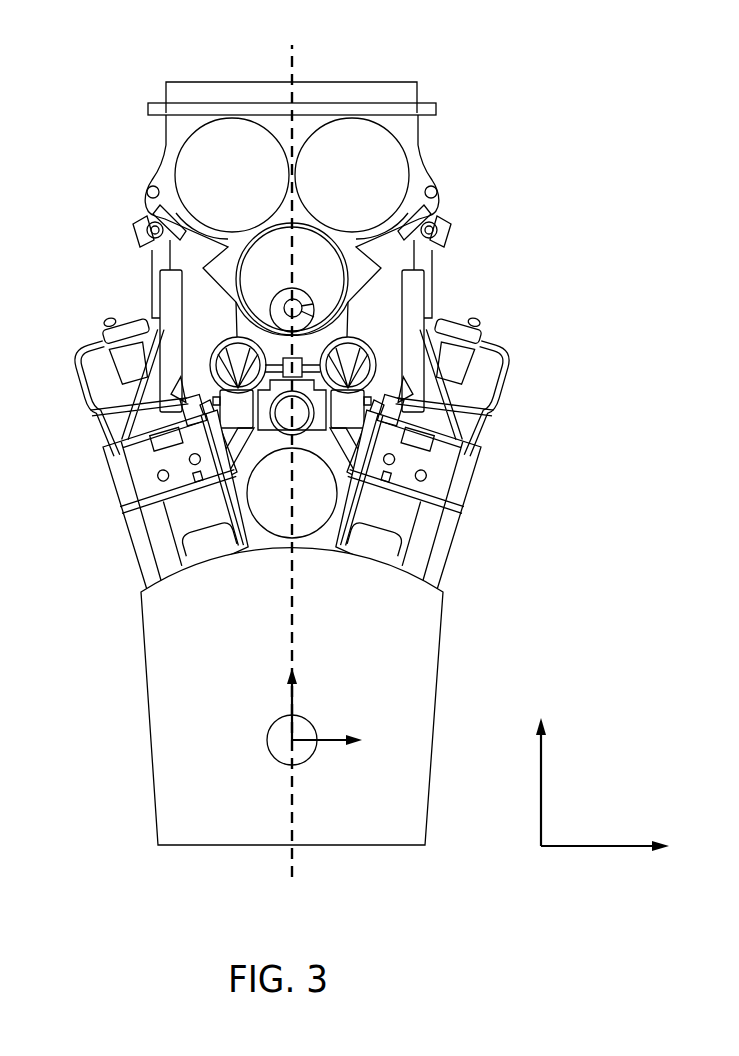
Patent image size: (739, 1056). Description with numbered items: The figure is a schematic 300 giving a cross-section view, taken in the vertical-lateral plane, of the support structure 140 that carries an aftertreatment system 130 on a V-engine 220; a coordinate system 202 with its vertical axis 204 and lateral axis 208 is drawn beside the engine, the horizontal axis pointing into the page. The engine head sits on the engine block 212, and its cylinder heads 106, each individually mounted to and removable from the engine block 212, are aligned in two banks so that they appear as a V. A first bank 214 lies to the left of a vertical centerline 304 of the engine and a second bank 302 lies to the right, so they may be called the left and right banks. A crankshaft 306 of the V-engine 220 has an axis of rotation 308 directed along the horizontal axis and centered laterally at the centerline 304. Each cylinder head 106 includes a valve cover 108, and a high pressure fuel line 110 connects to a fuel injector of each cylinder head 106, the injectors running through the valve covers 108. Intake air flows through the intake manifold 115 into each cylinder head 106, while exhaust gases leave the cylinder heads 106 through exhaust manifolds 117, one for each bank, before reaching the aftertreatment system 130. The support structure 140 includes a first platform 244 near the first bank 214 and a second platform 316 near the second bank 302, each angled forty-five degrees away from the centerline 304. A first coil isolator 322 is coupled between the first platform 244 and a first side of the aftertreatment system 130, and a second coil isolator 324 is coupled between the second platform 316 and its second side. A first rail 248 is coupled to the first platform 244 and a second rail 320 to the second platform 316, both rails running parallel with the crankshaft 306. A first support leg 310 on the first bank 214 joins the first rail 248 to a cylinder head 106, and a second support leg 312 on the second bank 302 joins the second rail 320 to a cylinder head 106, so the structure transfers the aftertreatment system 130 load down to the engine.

The schematic 300 is at (530, 58).
The vertical centerline 304 is at (299, 68).
The aftertreatment system 130 is at (476, 177).
The first coil isolator 322 is at (148, 216).
The first platform 244 is at (146, 228).
The first rail 248 is at (163, 253).
The exhaust manifolds 117 is at (235, 360).
The second coil isolator 324 is at (440, 222).
The second platform 316 is at (434, 242).
The second rail 320 is at (436, 256).
The second support leg 312 is at (416, 294).
The support structure 140 is at (548, 282).
The valve cover 108 is at (457, 362).
The cylinder heads 106 is at (478, 415).
The intake manifold 115 is at (316, 416).
The high pressure fuel line 110 is at (92, 366).
The first support leg 310 is at (168, 378).
The first bank 214 is at (70, 502).
The second bank 302 is at (522, 512).
The V-engine 220 is at (556, 592).
The engine block 212 is at (188, 752).
The crankshaft 306 is at (283, 750).
The axis of rotation 308 is at (297, 748).
The coordinate system 202 is at (570, 817).
The vertical axis 204 is at (540, 782).
The lateral axis 208 is at (614, 845).